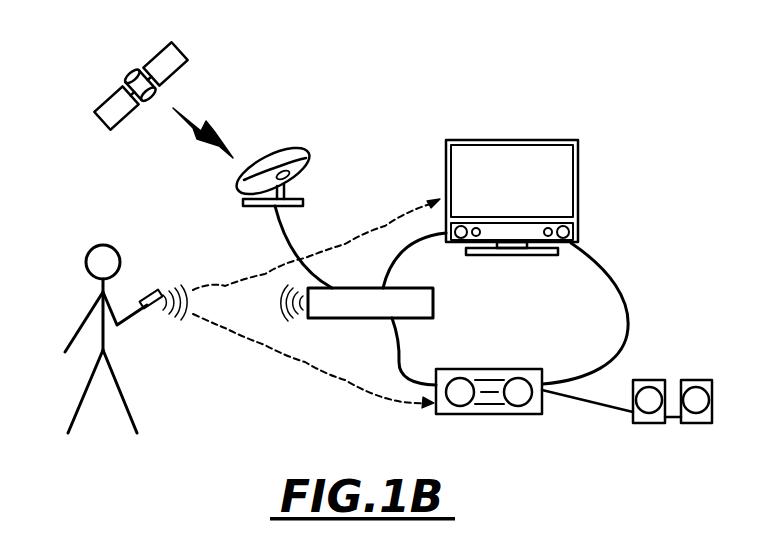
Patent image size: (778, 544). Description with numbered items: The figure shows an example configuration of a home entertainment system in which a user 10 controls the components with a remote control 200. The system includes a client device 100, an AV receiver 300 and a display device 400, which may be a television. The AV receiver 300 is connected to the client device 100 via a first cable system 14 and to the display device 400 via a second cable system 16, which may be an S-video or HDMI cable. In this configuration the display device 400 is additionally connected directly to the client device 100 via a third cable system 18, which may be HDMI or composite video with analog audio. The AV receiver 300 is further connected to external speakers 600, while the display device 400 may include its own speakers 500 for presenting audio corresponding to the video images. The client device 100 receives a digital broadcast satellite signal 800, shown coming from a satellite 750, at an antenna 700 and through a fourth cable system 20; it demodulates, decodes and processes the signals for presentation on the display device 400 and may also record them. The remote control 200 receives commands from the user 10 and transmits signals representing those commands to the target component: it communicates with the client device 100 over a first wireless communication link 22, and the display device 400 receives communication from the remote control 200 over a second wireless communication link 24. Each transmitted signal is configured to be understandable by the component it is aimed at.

The user 10 is at (92, 307).
The first cable system 14 is at (399, 352).
The second cable system 16 is at (630, 302).
The third cable system 18 is at (405, 253).
The fourth cable system 20 is at (317, 282).
The first wireless communication link 22 is at (180, 318).
The second wireless communication link 24 is at (396, 215).
The client device 100 is at (330, 318).
The remote control 200 is at (155, 296).
The AV receiver 300 is at (531, 414).
The display device 400 is at (540, 140).
The speakers 500 is at (570, 232).
The speakers 600 is at (653, 380).
The antenna 700 is at (303, 158).
The satellite 750 is at (187, 65).
The digital broadcast satellite signal 800 is at (212, 130).